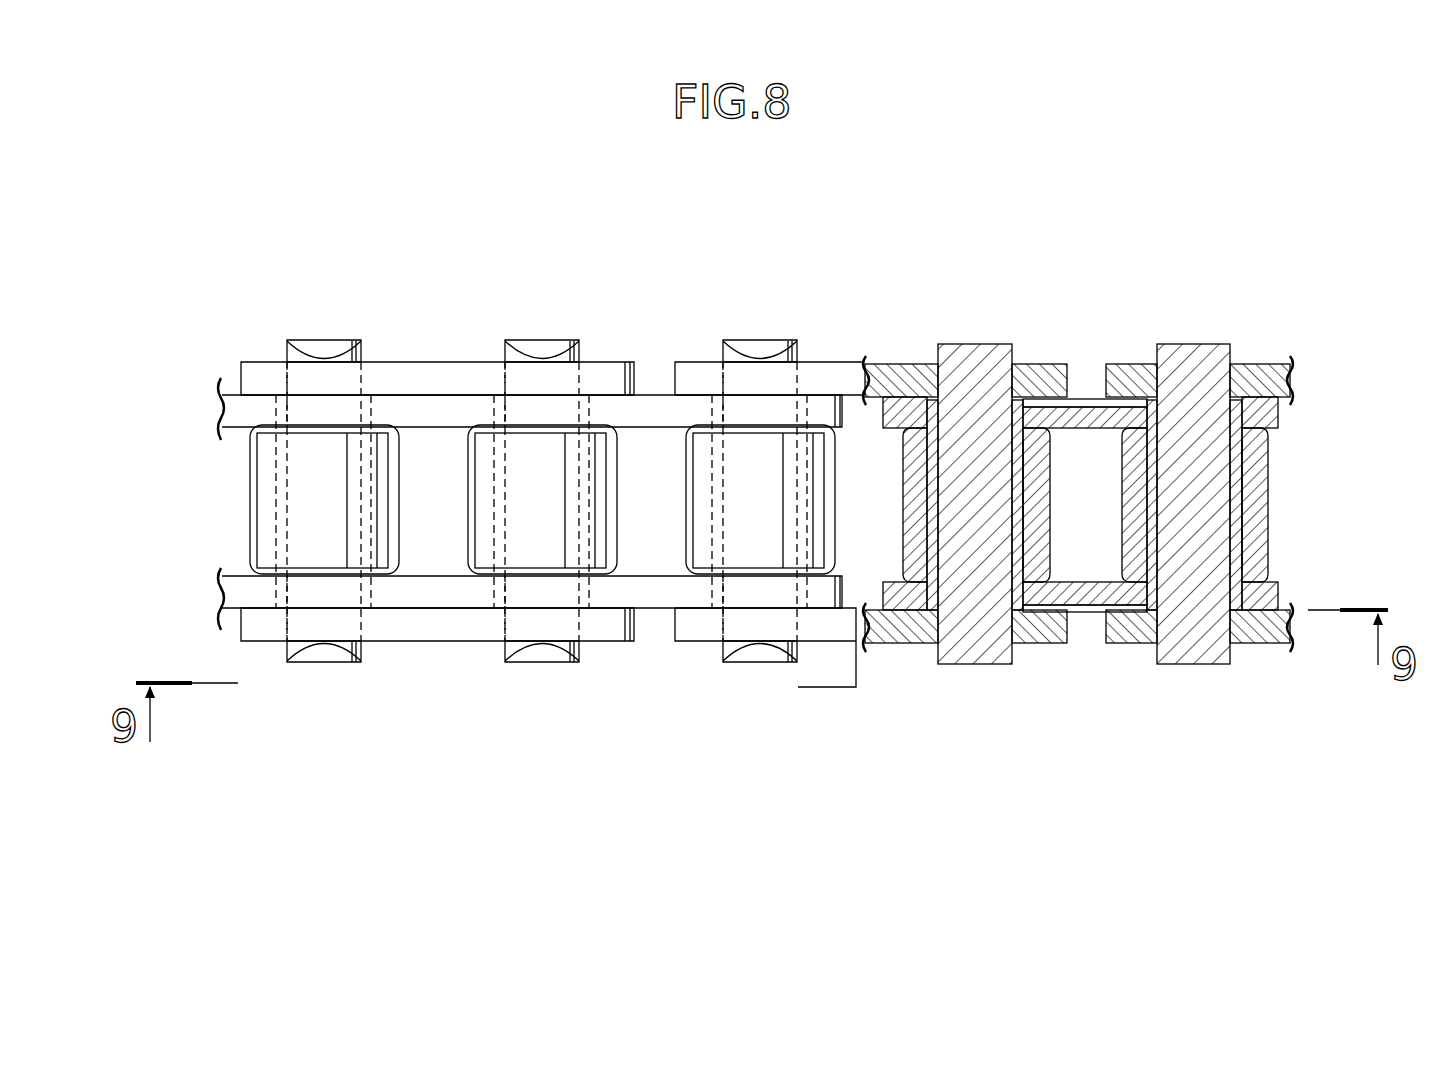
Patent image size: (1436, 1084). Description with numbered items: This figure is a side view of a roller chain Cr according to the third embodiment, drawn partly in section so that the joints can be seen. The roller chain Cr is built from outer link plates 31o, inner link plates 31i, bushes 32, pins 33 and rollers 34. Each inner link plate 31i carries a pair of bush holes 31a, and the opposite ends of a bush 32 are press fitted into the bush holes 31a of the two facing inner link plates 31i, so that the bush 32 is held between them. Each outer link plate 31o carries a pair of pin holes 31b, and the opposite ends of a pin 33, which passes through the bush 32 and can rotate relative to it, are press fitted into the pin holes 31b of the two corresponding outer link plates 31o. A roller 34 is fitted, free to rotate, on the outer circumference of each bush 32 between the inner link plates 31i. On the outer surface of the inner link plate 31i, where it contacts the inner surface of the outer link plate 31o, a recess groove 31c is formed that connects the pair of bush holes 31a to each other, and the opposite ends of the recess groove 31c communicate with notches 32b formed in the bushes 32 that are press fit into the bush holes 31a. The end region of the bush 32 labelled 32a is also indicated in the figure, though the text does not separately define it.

The roller chain Cr is at (660, 272).
The outer link plate 31o is at (409, 358).
The inner link plate 31i is at (652, 391).
The bush hole 31a is at (278, 420).
The pin hole 31b is at (297, 382).
The recess groove 31c is at (1120, 399).
The bush 32 is at (371, 495).
The bushing end face 32a is at (1024, 517).
The notch 32b is at (1017, 404).
The pin 33 is at (320, 337).
The roller 34 is at (385, 484).